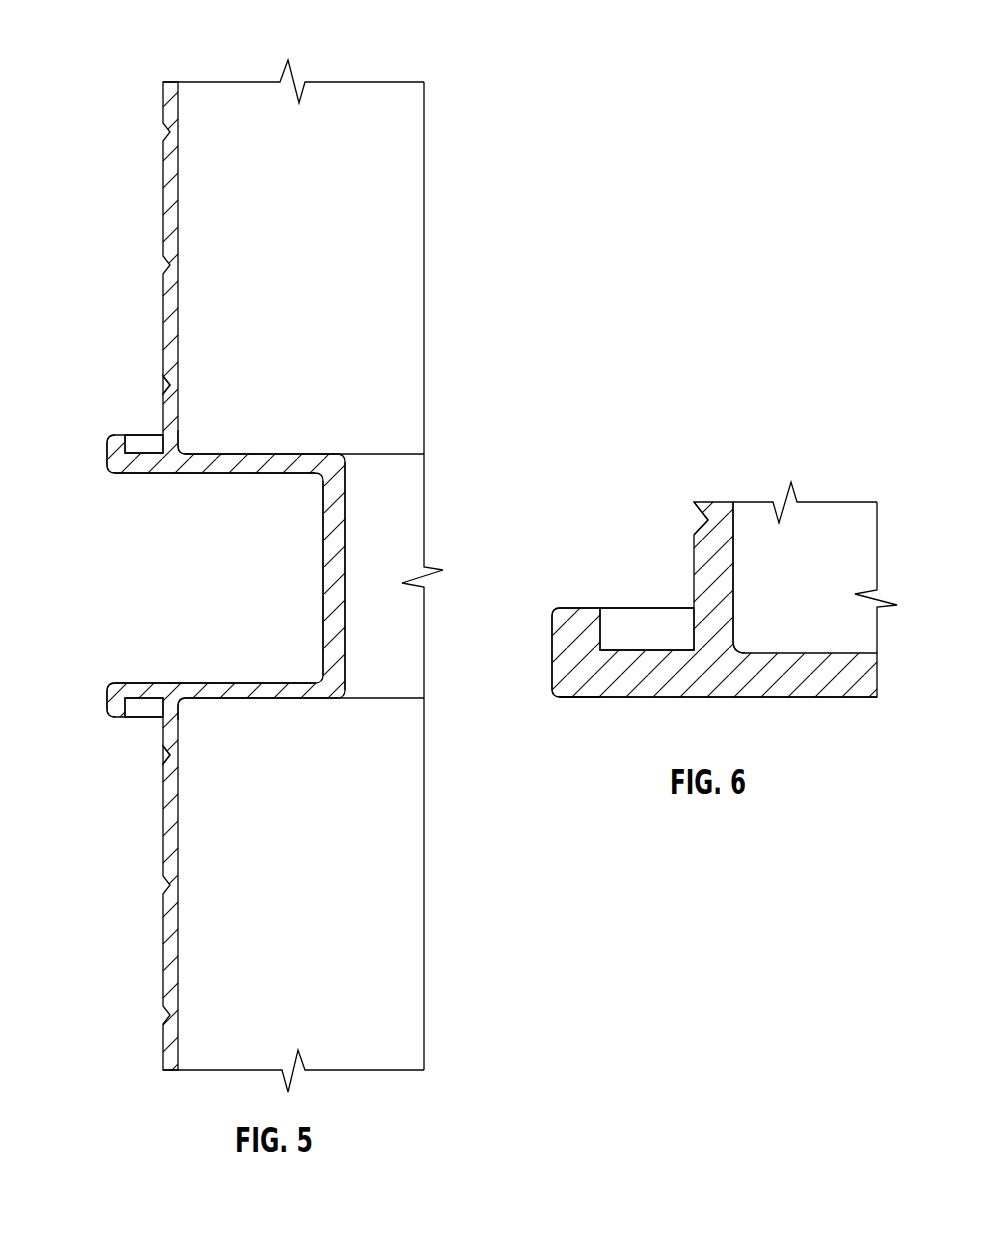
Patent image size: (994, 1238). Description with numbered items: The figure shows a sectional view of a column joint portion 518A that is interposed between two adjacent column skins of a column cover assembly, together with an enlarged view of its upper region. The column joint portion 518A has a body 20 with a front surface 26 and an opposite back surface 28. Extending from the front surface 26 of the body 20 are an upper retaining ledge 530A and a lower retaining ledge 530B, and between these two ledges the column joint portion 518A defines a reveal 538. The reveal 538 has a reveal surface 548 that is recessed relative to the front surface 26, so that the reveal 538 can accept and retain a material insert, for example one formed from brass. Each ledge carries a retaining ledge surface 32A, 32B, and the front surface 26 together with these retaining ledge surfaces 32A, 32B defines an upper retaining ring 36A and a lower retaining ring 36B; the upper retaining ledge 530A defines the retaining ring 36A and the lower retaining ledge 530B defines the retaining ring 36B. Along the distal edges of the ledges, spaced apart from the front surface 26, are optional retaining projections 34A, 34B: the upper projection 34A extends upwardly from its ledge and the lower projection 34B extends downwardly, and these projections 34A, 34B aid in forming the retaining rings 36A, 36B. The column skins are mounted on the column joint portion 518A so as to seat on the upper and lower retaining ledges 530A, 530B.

In FIG. 5, the body 20 is at (416, 202).
In FIG. 6, the body 20 is at (866, 568).
In FIG. 5, the front surface 26 is at (160, 193).
In FIG. 5, the back surface 28 is at (416, 142).
In FIG. 6, the back surface 28 is at (866, 520).
In FIG. 5, the retaining ledge surface 32A is at (143, 450).
In FIG. 6, the retaining ledge surface 32A is at (638, 645).
In FIG. 5, the retaining ledge surface 32B is at (143, 702).
In FIG. 5, the upper retaining projection 34A is at (108, 440).
In FIG. 6, the upper retaining projection 34A is at (552, 608).
In FIG. 5, the lower retaining projection 34B is at (108, 713).
In FIG. 5, the upper retaining ring 36A is at (156, 414).
In FIG. 6, the upper retaining ring 36A is at (668, 574).
In FIG. 5, the lower retaining ring 36B is at (156, 737).
In FIG. 5, the column joint portion 518A is at (438, 45).
In FIG. 6, the column joint portion 518A is at (600, 464).
In FIG. 5, the upper retaining ledge 530A is at (110, 470).
In FIG. 6, the upper retaining ledge 530A is at (552, 692).
In FIG. 5, the lower retaining ledge 530B is at (110, 684).
In FIG. 5, the reveal 538 is at (140, 590).
In FIG. 5, the reveal surface 548 is at (322, 590).